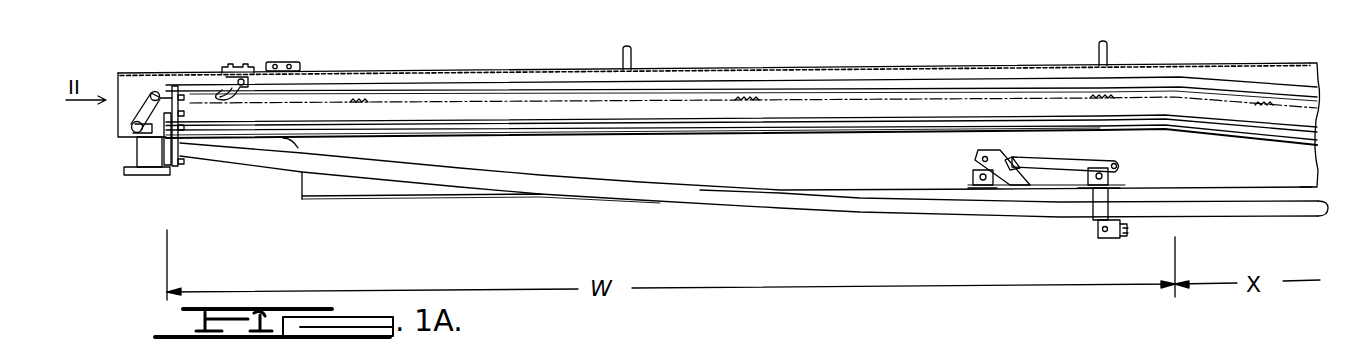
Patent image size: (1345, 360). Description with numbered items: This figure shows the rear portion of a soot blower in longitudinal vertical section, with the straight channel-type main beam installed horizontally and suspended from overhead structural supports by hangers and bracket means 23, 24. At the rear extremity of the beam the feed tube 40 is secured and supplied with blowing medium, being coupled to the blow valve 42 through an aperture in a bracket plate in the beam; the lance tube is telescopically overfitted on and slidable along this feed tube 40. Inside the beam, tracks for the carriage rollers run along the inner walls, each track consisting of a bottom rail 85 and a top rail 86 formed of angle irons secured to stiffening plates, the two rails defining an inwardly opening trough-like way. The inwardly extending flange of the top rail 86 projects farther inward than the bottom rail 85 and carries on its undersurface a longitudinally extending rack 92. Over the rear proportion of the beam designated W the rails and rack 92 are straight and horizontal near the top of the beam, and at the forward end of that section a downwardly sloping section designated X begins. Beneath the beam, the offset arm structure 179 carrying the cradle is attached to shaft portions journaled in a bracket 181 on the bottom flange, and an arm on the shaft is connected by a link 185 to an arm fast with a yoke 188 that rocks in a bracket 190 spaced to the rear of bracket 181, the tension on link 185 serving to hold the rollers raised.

The hangers and bracket means 23 is at (305, 62).
The hangers and bracket means 24 is at (1095, 47).
The feed tube 40 is at (248, 153).
The blow valve 42 is at (135, 150).
The bottom rail 85 is at (808, 134).
The top rail 86 is at (545, 85).
The rack 92 is at (732, 100).
The offset arm structure 179 is at (1093, 210).
The bracket 181 is at (1127, 175).
The link 185 is at (1088, 163).
The yoke 188 is at (1013, 156).
The bracket 190 is at (975, 176).